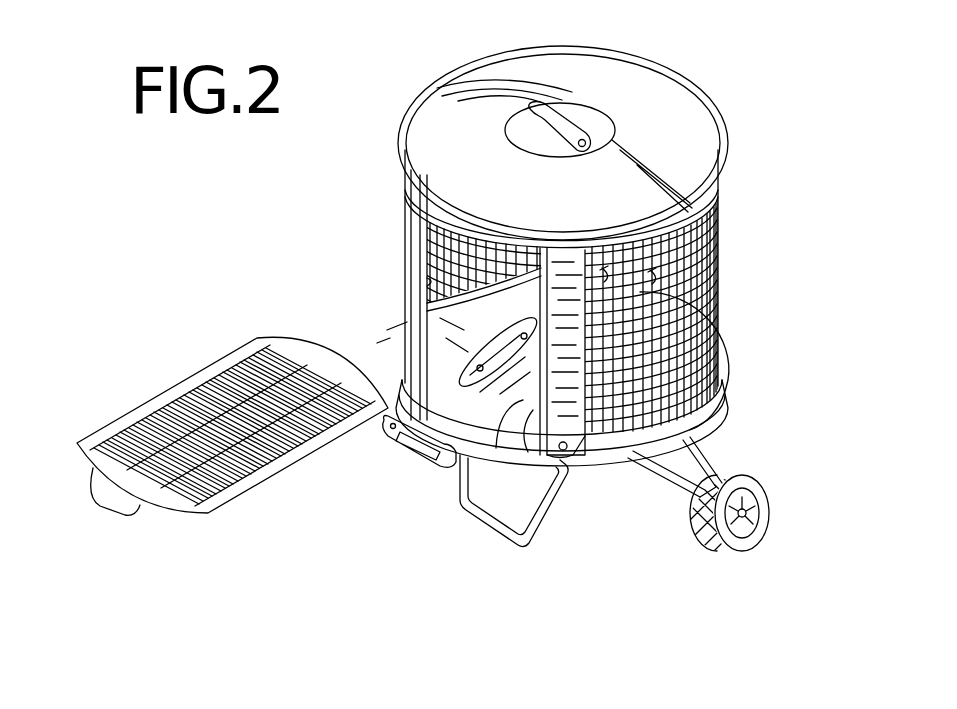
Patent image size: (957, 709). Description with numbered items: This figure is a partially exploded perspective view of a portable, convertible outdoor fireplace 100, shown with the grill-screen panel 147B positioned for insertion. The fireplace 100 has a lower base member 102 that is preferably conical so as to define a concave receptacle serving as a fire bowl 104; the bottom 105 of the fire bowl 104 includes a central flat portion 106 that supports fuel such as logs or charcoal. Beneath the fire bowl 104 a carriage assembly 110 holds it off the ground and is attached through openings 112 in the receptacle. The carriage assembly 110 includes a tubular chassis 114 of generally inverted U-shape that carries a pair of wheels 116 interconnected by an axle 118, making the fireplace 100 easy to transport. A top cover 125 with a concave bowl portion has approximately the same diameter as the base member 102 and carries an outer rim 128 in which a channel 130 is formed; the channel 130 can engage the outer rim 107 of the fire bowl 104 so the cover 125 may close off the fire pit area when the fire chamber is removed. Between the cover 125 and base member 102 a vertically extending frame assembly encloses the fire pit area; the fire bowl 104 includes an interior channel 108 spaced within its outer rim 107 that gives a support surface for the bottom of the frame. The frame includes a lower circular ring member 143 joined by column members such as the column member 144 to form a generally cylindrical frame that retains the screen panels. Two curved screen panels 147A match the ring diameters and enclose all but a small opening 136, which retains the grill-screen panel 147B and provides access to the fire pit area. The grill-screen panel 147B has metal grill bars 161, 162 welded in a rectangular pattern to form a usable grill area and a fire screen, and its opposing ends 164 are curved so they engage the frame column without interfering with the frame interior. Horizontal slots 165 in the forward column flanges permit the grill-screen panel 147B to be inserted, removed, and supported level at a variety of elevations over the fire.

The portable convertible outdoor fireplace 100 is at (737, 128).
The lower base member 102 is at (727, 411).
The fire bowl 104 is at (445, 337).
The bottom of the fire bowl 105 is at (458, 505).
The central flat portion 106 is at (528, 422).
The outer rim of the fire bowl 107 is at (715, 380).
The interior channel 108 is at (697, 430).
The carriage assembly 110 is at (668, 492).
The openings 112 is at (510, 345).
The tubular chassis 114 is at (495, 522).
The wheels 116 is at (757, 522).
The axle 118 is at (690, 493).
The top cover 125 is at (633, 80).
The outer rim of the cover 128 is at (698, 90).
The channel 130 is at (402, 176).
The opening 136 is at (390, 252).
The lower circular ring member 143 is at (707, 427).
The column member 144 is at (573, 452).
The screen panels 147A is at (452, 240).
The grill-screen panel 147B is at (176, 383).
The grill bars 161 is at (248, 462).
The grill bars 162 is at (128, 423).
The opposing ends of the grill-screen panel 164 is at (278, 343).
The horizontal slots 165 is at (543, 260).